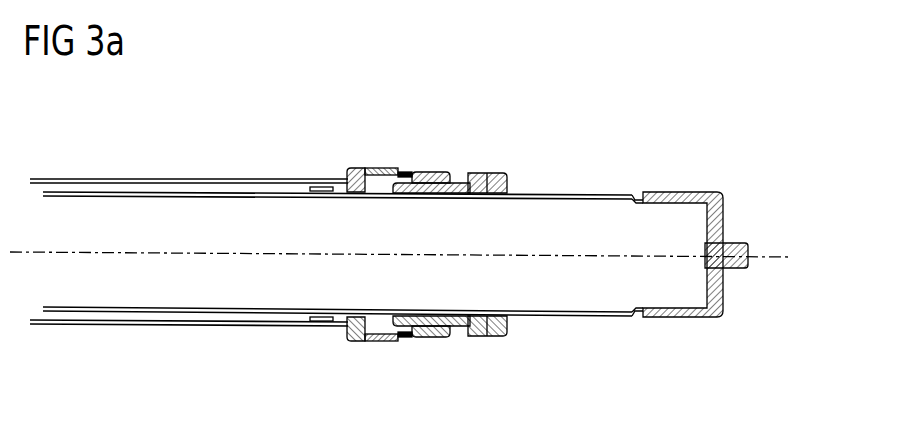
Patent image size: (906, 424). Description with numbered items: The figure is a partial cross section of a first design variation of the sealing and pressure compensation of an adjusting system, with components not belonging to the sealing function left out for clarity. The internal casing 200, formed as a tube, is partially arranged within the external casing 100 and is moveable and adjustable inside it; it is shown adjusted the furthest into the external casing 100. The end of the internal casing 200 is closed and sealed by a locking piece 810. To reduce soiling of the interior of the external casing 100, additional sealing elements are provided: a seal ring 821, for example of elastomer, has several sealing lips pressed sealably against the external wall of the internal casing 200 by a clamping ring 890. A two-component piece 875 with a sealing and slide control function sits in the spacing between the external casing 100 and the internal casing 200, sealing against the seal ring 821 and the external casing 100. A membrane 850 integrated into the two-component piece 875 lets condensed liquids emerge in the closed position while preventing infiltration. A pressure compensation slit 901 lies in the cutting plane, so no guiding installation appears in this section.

The external casing 100 is at (163, 178).
The internal casing 200 is at (600, 192).
The 2K-piece 875 is at (355, 166).
The membrane 850 is at (384, 167).
The seal ring 821 is at (437, 171).
The clamping ring 890 is at (503, 173).
The locking piece 810 is at (723, 287).
The pressure compensation slit 901 is at (333, 309).